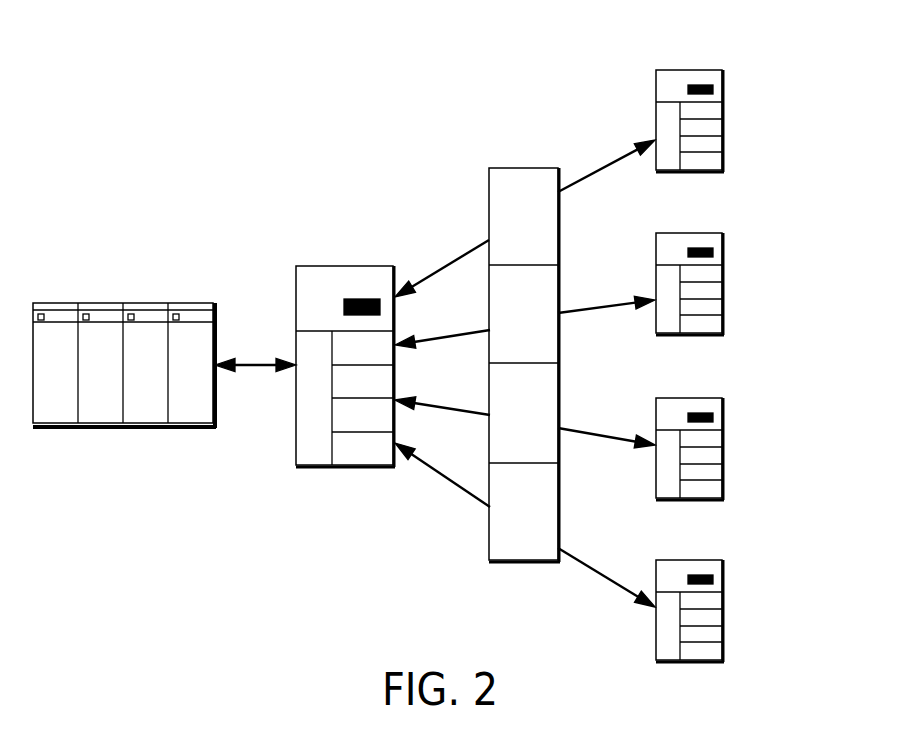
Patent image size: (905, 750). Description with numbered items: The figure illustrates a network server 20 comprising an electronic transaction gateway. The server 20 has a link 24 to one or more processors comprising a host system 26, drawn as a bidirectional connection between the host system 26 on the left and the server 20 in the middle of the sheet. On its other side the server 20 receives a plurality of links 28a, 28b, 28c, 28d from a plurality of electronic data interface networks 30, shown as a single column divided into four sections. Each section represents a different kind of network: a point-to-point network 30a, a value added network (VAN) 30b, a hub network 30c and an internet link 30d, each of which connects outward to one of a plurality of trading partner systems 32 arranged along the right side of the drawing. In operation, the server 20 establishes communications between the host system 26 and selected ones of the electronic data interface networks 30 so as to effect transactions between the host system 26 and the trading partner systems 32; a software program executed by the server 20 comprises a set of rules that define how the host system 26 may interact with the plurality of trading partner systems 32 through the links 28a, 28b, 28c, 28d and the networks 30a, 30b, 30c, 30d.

The server 20 is at (347, 467).
The link 24 is at (246, 364).
The host system 26 is at (185, 302).
The link 28a is at (450, 263).
The link 28b is at (472, 332).
The link 28c is at (472, 412).
The link 28d is at (448, 479).
The electronic data interface networks 30 is at (529, 152).
The point-to-point network 30a is at (558, 236).
The value added network 30b is at (558, 290).
The hub network 30c is at (558, 402).
The internet link 30d is at (558, 510).
The trading partner systems 32 is at (722, 70).